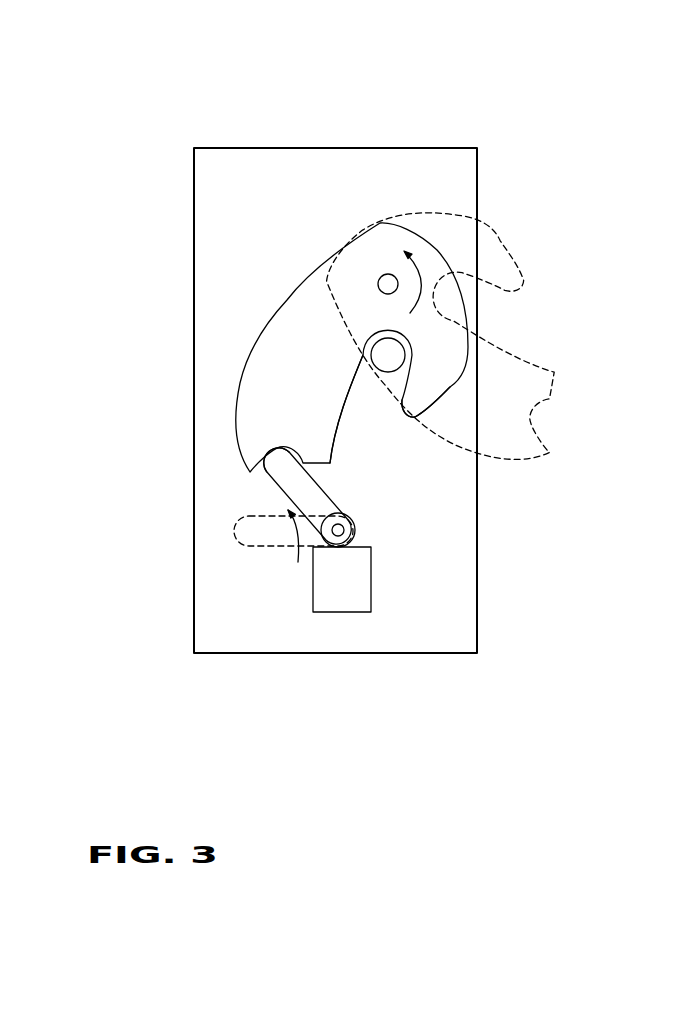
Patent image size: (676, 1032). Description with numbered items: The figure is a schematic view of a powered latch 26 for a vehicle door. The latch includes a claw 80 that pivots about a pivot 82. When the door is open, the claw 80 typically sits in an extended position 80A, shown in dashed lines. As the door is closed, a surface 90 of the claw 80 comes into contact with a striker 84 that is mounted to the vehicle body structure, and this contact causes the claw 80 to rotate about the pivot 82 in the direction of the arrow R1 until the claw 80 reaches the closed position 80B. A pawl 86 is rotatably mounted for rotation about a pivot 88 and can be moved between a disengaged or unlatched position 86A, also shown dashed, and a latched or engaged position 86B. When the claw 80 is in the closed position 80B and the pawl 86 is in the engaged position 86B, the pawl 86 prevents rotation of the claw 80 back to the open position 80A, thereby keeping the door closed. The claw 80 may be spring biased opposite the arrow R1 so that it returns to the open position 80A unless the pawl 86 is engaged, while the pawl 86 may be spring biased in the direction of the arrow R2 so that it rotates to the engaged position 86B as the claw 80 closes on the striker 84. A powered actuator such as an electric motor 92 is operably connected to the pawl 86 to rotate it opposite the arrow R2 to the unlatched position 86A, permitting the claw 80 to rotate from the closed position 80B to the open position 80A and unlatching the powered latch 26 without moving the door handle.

The powered latch 26 is at (340, 148).
The claw 80 is at (386, 222).
The extended position 80A is at (513, 267).
The closed position 80B is at (450, 387).
The pivot 82 is at (379, 277).
The striker 84 is at (377, 380).
The pawl 86 is at (277, 483).
The disengaged or unlatched position 86A is at (233, 537).
The latched or engaged position 86B is at (270, 474).
The pivot 88 is at (355, 528).
The surface 90 is at (341, 407).
The electric motor 92 is at (344, 604).
The arrow R1 is at (427, 274).
The arrow R2 is at (283, 541).